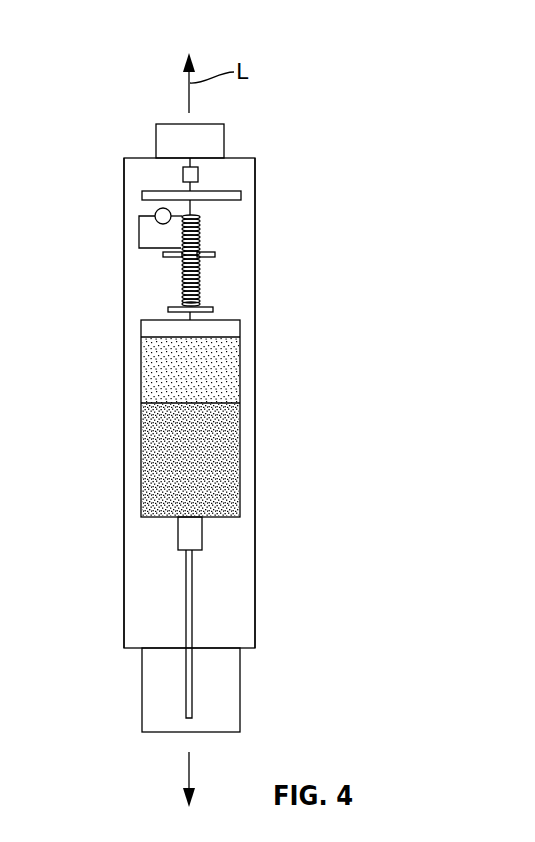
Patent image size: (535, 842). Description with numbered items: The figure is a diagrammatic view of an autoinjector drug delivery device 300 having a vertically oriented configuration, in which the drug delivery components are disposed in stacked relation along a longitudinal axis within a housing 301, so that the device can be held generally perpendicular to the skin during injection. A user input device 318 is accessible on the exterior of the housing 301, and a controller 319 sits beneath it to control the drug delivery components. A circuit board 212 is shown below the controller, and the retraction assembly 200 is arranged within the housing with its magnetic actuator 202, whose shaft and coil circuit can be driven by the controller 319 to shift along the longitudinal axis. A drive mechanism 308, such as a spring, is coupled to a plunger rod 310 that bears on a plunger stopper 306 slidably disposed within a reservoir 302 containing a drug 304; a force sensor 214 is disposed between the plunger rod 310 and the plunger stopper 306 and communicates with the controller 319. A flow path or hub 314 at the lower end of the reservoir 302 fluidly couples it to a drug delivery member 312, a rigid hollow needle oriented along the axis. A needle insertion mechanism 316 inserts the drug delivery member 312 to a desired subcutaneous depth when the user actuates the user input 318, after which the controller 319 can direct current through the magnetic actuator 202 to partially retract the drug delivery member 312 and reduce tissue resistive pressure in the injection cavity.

The autoinjector drug delivery device 300 is at (392, 100).
The user input device 318 is at (157, 143).
The controller 319 is at (183, 175).
The circuit board 212 is at (241, 195).
The drive mechanism 308 is at (243, 232).
The housing 301 is at (125, 211).
The magnetic actuator 202 is at (133, 221).
The needle insertion mechanism 316 is at (124, 294).
The retraction assembly 200 is at (244, 268).
The plunger rod 310 is at (194, 317).
The force sensor 214 is at (153, 330).
The plunger stopper 306 is at (228, 370).
The drug 304 is at (153, 467).
The reservoir 302 is at (240, 455).
The flow path or hub 314 is at (203, 533).
The drug delivery member 312 is at (193, 593).